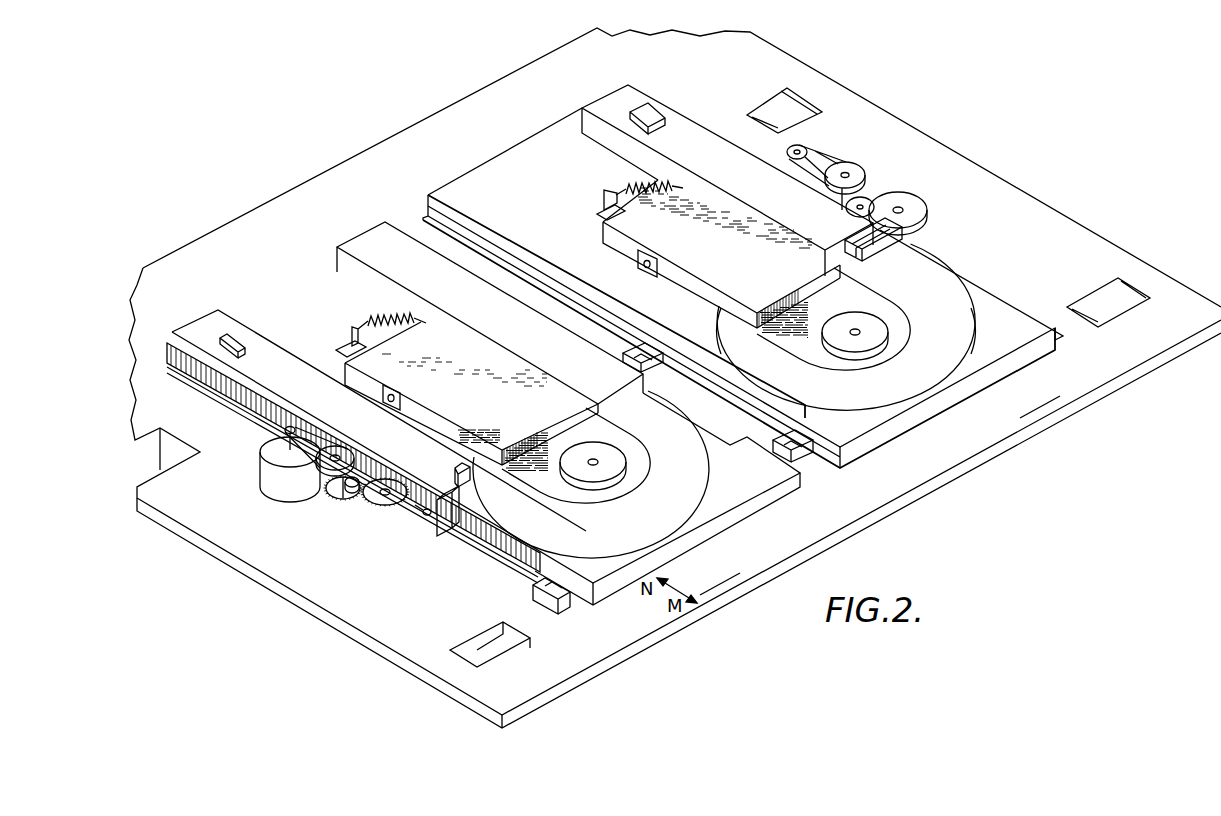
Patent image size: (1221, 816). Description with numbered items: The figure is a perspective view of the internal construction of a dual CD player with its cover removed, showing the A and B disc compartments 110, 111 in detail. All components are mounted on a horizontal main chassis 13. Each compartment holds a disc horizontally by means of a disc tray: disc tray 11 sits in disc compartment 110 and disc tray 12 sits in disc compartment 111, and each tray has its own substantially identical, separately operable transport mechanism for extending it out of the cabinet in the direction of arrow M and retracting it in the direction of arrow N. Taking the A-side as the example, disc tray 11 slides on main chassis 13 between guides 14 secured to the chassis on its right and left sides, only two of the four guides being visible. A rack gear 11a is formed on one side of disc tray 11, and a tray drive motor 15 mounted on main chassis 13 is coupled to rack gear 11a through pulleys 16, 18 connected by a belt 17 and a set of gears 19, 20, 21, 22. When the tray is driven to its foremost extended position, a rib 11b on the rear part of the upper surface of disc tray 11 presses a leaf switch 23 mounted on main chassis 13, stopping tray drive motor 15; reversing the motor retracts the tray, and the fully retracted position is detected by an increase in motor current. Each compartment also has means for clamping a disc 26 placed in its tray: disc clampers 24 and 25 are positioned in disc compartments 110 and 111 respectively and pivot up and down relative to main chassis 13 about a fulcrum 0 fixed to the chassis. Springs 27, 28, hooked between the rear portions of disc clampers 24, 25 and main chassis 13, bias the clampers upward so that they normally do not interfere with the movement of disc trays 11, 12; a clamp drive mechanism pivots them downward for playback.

The fulcrum 0 is at (398, 388).
The disc tray 11 is at (760, 508).
The rack gear 11a is at (298, 408).
The rib 11b is at (196, 374).
The disc tray 12 is at (950, 403).
The main chassis 13 is at (343, 627).
The guides 14 is at (434, 520).
The tray drive motor 15 is at (277, 490).
The pulley 16 is at (284, 431).
The belt 17 is at (305, 462).
The pulley 18 is at (350, 450).
The gear 19 is at (337, 500).
The gear 20 is at (340, 508).
The gear 21 is at (357, 502).
The gear 22 is at (383, 500).
The leaf switch 23 is at (468, 486).
The disc clamper 24 is at (612, 448).
The disc clamper 25 is at (883, 317).
The disc 26 is at (675, 488).
The spring 27 is at (388, 322).
The spring 28 is at (620, 180).
The disc compartment 110 is at (722, 583).
The disc compartment 111 is at (1040, 398).